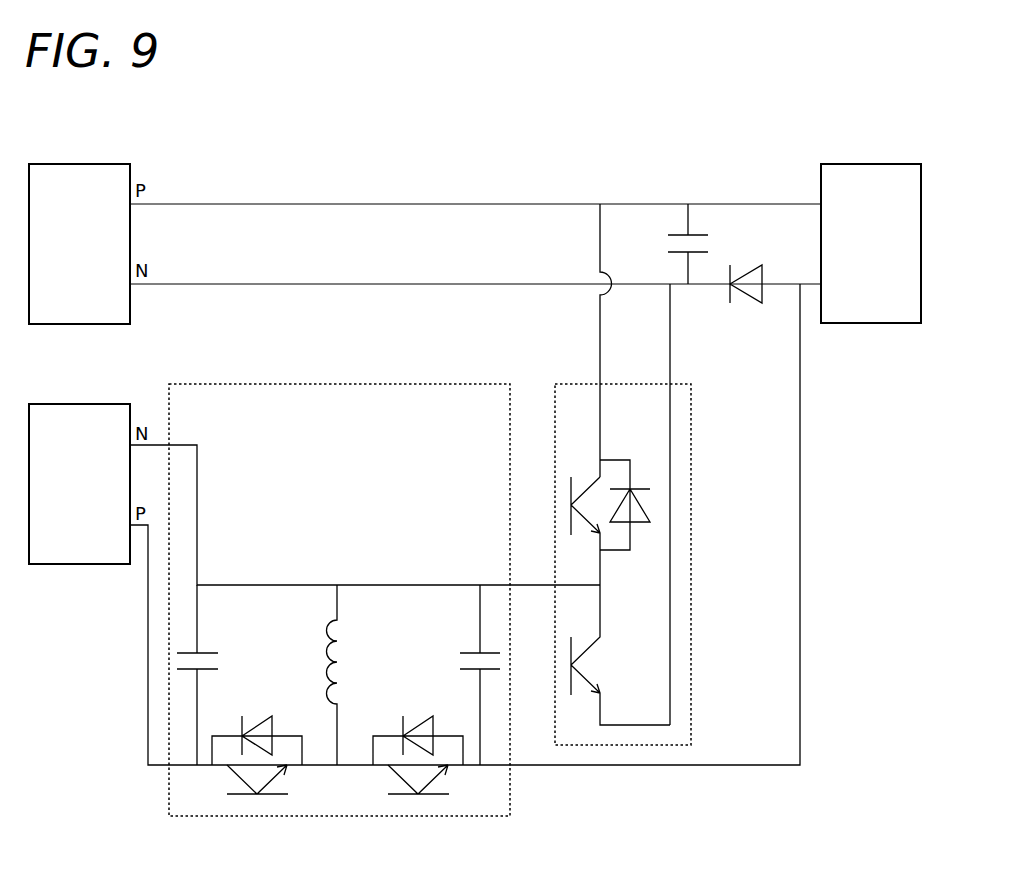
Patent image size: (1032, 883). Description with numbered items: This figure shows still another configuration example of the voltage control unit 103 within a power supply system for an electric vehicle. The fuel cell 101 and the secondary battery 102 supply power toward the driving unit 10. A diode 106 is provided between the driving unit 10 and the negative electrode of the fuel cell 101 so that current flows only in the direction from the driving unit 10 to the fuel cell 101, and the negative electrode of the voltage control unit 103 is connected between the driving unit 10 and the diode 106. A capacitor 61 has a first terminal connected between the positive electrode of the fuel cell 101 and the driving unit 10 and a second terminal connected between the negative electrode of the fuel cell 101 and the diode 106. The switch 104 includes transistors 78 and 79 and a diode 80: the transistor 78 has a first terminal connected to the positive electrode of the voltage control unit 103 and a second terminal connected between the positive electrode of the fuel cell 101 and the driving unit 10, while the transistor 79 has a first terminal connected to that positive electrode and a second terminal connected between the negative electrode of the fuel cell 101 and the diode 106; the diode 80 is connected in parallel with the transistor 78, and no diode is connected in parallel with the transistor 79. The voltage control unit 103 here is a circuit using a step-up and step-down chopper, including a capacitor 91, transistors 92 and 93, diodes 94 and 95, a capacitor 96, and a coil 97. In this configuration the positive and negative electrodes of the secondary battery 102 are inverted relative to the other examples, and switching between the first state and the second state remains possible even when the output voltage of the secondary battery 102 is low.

The driving unit 10 is at (872, 164).
The capacitor 61 is at (700, 235).
The transistor 78 is at (571, 477).
The transistor 79 is at (571, 637).
The diode 80 is at (640, 489).
The capacitor 91 is at (208, 653).
The transistor 92 is at (237, 797).
The transistor 93 is at (398, 797).
The diode 94 is at (240, 716).
The diode 95 is at (400, 716).
The capacitor 96 is at (467, 672).
The coil 97 is at (320, 633).
The fuel cell 101 is at (77, 164).
The secondary battery 102 is at (77, 404).
The voltage control unit 103 is at (336, 384).
The switch 104 is at (569, 384).
The diode 106 is at (747, 303).